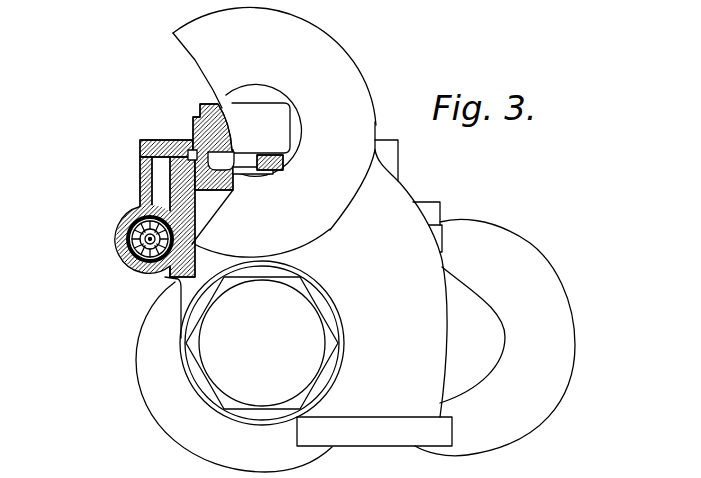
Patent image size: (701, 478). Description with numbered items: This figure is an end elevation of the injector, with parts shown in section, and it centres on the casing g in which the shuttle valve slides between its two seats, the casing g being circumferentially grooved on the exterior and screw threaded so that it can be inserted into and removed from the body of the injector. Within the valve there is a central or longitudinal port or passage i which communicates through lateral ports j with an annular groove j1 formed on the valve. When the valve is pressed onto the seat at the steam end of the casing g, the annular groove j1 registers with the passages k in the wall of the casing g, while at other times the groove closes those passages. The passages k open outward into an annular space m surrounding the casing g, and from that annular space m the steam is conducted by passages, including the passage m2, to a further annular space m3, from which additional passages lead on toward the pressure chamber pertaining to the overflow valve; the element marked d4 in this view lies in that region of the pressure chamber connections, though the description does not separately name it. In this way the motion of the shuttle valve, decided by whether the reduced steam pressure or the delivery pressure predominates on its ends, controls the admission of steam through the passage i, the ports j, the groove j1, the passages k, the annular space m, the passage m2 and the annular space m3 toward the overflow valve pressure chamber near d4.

The cam disc boss d4 is at (233, 130).
The passage m2 is at (178, 142).
The annular space m3 is at (165, 175).
The annular space m is at (235, 153).
The cylinder or casing g is at (125, 258).
The lateral ports j is at (128, 238).
The passages k is at (172, 262).
The annular groove j1 is at (157, 272).
The longitudinal port or passage i is at (184, 236).